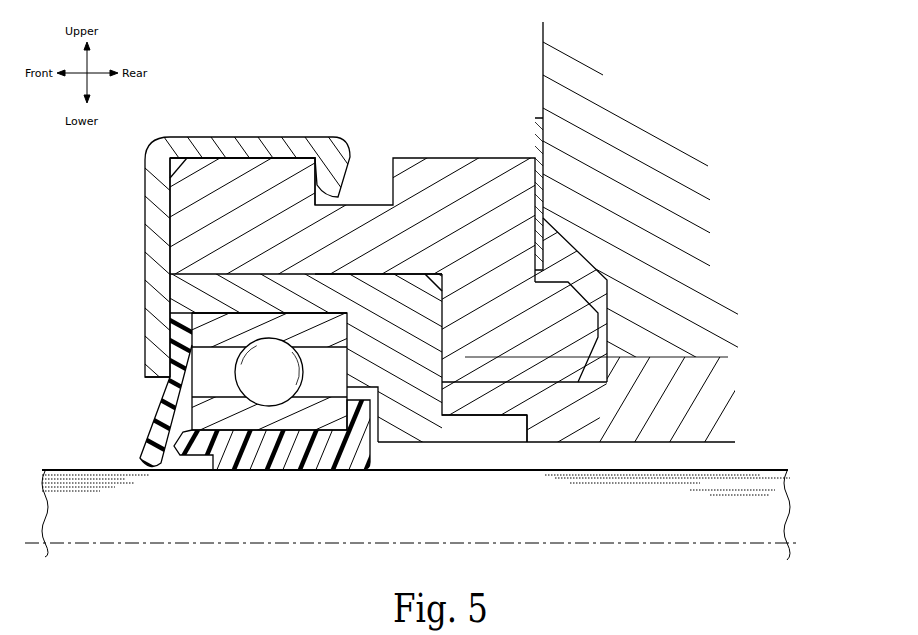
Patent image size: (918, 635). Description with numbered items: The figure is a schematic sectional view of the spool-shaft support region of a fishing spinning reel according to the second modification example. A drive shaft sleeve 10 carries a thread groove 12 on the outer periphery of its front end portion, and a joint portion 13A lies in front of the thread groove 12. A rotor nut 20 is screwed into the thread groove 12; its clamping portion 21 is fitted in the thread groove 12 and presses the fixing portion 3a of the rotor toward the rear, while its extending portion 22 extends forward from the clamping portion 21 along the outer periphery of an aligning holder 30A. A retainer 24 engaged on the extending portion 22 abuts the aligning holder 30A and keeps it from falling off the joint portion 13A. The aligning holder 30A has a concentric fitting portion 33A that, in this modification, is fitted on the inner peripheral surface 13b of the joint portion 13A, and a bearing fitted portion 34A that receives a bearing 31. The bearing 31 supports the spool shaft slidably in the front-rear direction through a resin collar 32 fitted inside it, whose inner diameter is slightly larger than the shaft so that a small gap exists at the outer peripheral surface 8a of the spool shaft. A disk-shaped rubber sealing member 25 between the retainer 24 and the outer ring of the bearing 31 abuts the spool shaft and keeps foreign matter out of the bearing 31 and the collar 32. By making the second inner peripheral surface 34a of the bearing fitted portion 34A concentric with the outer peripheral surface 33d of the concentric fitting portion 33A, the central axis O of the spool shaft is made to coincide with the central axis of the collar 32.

The retainer 24 is at (263, 146).
The rotor nut 20 is at (456, 157).
The extending portion 22 is at (248, 222).
The clamping portion 21 is at (501, 275).
The aligning holder 30A is at (373, 272).
The thread groove 12 is at (571, 343).
The fixing portion 3a is at (650, 198).
The drive shaft sleeve 10 is at (685, 405).
The concentric fitting portion 33A is at (414, 337).
The bearing fitted portion 34A is at (293, 305).
The bearing 31 is at (200, 314).
The second inner peripheral surface 34a is at (313, 322).
The sealing member 25 is at (163, 408).
The collar 32 is at (255, 462).
The outer peripheral surface 8a is at (100, 470).
The outer peripheral surface 33d is at (455, 415).
The joint portion 13A is at (482, 412).
The inner peripheral surface 13b is at (508, 420).
The central axis O is at (404, 542).